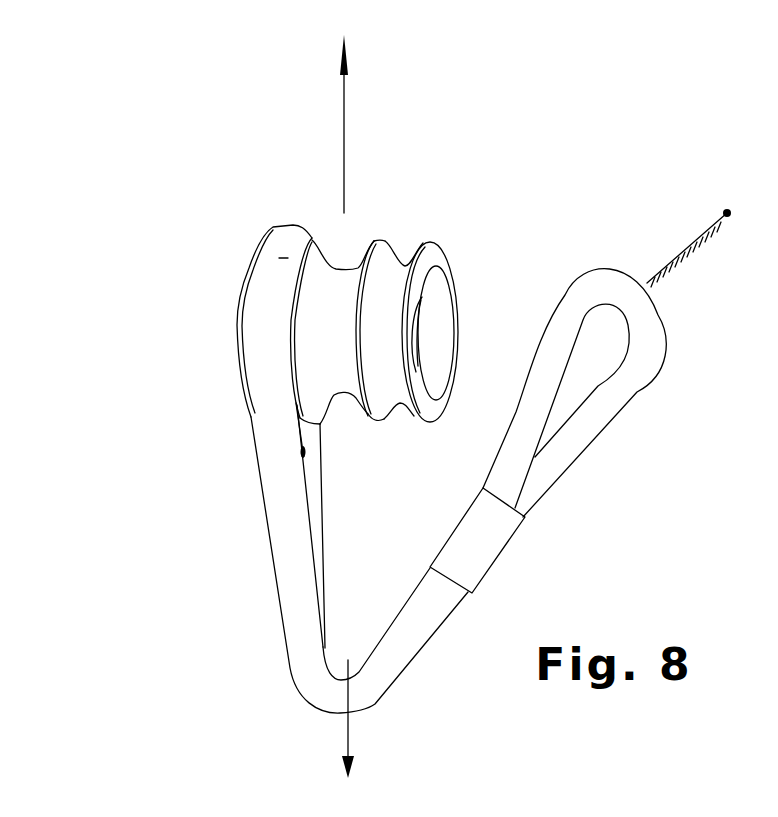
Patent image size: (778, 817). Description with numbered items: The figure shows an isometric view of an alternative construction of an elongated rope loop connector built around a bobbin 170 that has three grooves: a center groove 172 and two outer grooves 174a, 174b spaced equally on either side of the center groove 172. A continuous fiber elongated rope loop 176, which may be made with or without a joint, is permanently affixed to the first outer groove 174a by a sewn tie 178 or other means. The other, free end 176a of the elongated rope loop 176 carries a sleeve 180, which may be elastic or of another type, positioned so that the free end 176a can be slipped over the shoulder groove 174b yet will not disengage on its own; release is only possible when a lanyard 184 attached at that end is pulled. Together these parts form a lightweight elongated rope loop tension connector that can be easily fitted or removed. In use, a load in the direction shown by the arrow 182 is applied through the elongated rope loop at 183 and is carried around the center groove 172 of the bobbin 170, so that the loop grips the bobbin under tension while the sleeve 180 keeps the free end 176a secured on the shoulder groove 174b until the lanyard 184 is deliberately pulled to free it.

The bobbin 170 is at (385, 236).
The center groove 172 is at (339, 268).
The outer groove 174a is at (231, 254).
The outer groove 174b is at (406, 252).
The continuous fiber elongated rope loop 176 is at (272, 227).
The free end of the elongated rope loop 176a is at (607, 282).
The sewn tie 178 is at (280, 457).
The sleeve 180 is at (483, 552).
The arrow 182 is at (345, 108).
The elongated rope loop load point 183 is at (350, 753).
The lanyard 184 is at (730, 220).